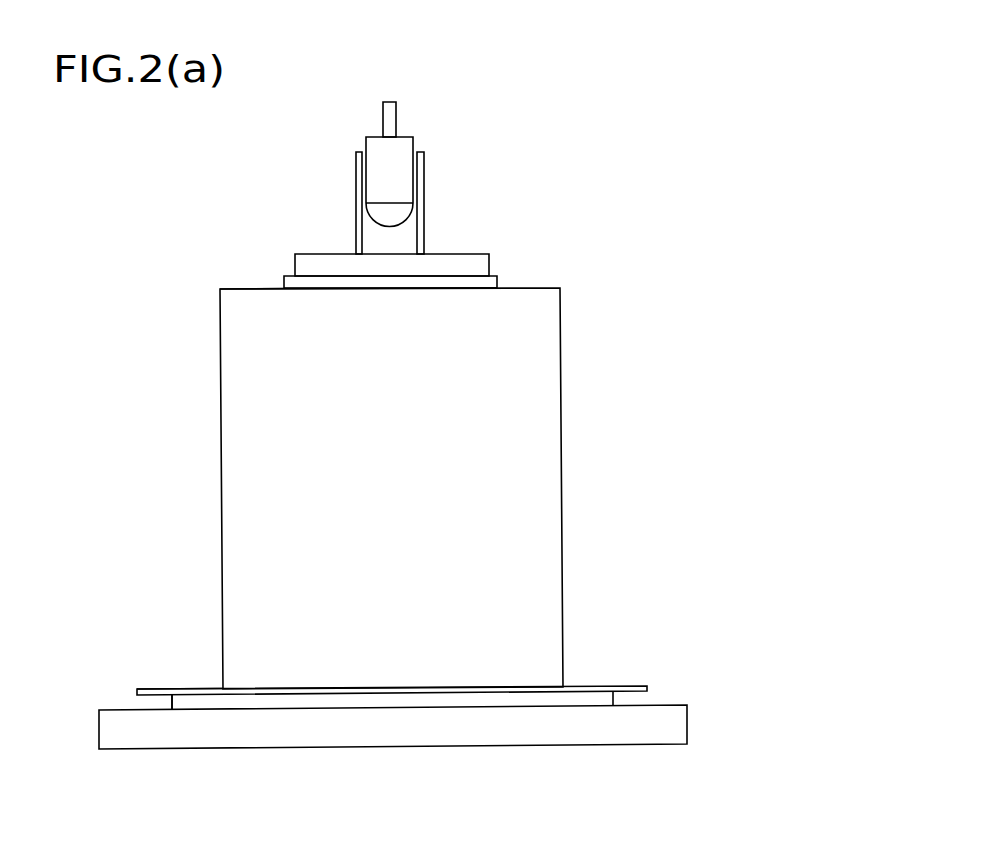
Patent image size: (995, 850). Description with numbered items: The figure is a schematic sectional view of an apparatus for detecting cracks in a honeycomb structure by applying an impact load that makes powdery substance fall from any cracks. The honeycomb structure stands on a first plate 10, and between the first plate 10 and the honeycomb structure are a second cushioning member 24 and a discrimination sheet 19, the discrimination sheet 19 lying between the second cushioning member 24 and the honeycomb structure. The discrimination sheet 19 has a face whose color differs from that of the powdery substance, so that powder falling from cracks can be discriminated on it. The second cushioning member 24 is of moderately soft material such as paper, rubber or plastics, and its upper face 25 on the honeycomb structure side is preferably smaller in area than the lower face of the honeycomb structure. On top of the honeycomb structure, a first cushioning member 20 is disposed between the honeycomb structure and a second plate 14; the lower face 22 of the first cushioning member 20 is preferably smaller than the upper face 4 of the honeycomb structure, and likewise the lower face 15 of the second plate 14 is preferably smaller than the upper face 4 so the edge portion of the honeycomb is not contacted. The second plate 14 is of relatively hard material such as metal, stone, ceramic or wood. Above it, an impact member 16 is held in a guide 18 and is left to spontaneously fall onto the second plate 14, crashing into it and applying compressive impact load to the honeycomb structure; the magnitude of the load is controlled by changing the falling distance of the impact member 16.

The upper face of the honeycomb structure 4 is at (340, 288).
The first plate 10 is at (692, 732).
The second plate 14 is at (498, 252).
The lower face of the second plate 15 is at (313, 285).
The impact member 16 is at (407, 136).
The guide 18 is at (425, 203).
The discrimination sheet 19 is at (643, 684).
The first cushioning member 20 is at (508, 282).
The lower face of the first cushioning member 22 is at (465, 289).
The second cushioning member 24 is at (622, 700).
The upper face of the second cushioning member 25 is at (202, 692).